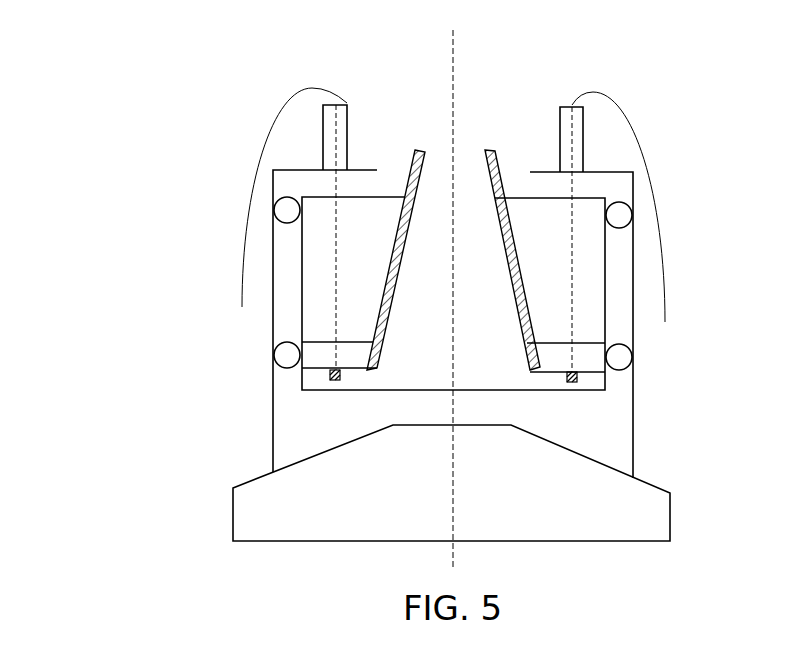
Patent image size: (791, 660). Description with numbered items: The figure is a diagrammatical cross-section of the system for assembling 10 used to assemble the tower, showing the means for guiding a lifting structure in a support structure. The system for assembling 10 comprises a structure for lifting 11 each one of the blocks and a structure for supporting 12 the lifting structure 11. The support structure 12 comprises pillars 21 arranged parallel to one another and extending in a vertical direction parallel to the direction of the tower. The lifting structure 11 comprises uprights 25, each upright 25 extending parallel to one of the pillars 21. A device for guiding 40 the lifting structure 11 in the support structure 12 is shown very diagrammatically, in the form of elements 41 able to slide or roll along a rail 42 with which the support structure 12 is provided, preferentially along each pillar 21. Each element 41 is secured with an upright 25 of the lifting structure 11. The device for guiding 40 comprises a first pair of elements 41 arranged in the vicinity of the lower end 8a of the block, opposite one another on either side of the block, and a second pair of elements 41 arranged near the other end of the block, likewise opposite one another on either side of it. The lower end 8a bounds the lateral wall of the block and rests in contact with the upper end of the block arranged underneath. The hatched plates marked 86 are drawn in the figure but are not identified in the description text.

The system for assembling 10 is at (127, 236).
The structure for lifting 11 is at (608, 293).
The structure for supporting 12 is at (268, 420).
The pillar 21 is at (632, 412).
The upright 25 is at (607, 327).
The device for guiding 40 is at (640, 207).
The element 41 is at (286, 213).
The rail 42 is at (293, 330).
The guide plate 86 is at (470, 160).
The lower end 8a is at (490, 375).